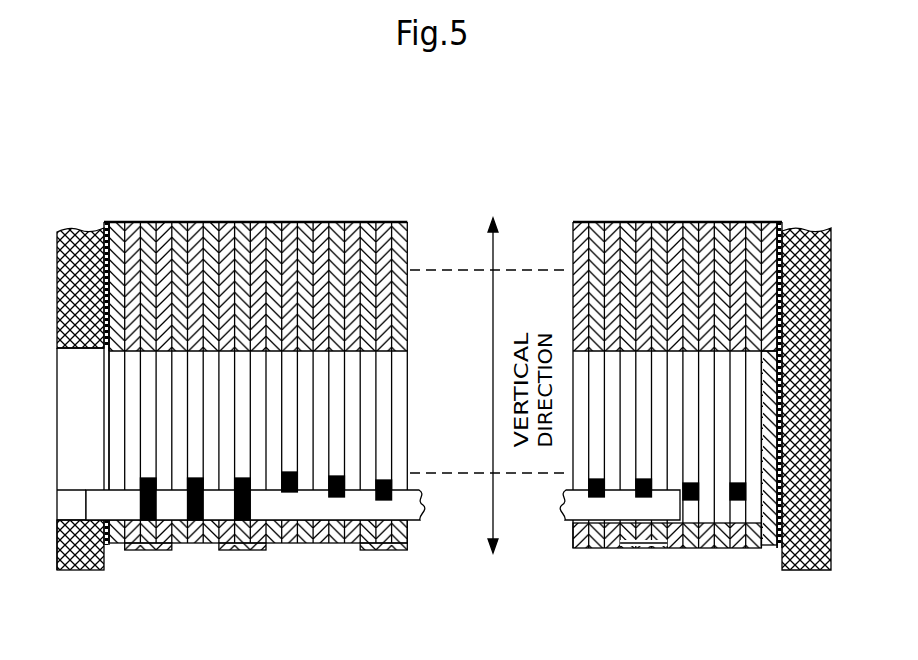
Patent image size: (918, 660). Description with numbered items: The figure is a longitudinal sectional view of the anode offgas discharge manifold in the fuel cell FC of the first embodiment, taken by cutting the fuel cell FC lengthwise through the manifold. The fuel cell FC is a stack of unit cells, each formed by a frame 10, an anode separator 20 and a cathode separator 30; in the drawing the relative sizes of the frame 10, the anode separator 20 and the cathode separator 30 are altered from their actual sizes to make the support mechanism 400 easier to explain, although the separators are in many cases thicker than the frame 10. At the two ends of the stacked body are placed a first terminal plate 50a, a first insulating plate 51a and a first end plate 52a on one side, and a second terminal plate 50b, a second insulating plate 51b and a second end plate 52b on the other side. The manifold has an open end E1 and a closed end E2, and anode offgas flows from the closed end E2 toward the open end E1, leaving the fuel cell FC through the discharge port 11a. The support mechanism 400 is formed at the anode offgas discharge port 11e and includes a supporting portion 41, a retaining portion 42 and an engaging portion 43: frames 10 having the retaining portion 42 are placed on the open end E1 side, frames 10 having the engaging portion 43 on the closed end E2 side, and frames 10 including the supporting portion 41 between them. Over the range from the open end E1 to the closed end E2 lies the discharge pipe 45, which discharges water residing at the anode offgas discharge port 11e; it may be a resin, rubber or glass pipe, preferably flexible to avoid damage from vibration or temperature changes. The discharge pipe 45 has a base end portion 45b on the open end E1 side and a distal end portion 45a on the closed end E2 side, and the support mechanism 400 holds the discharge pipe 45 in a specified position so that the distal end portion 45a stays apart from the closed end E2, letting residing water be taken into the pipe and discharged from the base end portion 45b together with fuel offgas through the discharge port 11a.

The fuel cell FC is at (471, 150).
The frame 10 is at (148, 238).
The anode separator 20 is at (122, 240).
The cathode separator 30 is at (166, 240).
The discharge port 11a is at (62, 350).
The anode offgas discharge port 11e is at (290, 421).
The first terminal plate 50a is at (110, 222).
The first insulating plate 51a is at (107, 225).
The first end plate 52a is at (78, 232).
The second terminal plate 50b is at (760, 222).
The second insulating plate 51b is at (782, 225).
The second end plate 52b is at (815, 232).
The discharge pipe 45 is at (346, 517).
The distal end portion 45a is at (670, 508).
The base end portion 45b is at (95, 508).
The support mechanism 400 is at (442, 548).
The supporting portion 41 is at (357, 548).
The retaining portion 42 is at (240, 548).
The engaging portion 43 is at (738, 503).
The open end E1 is at (108, 545).
The closed end E2 is at (756, 518).